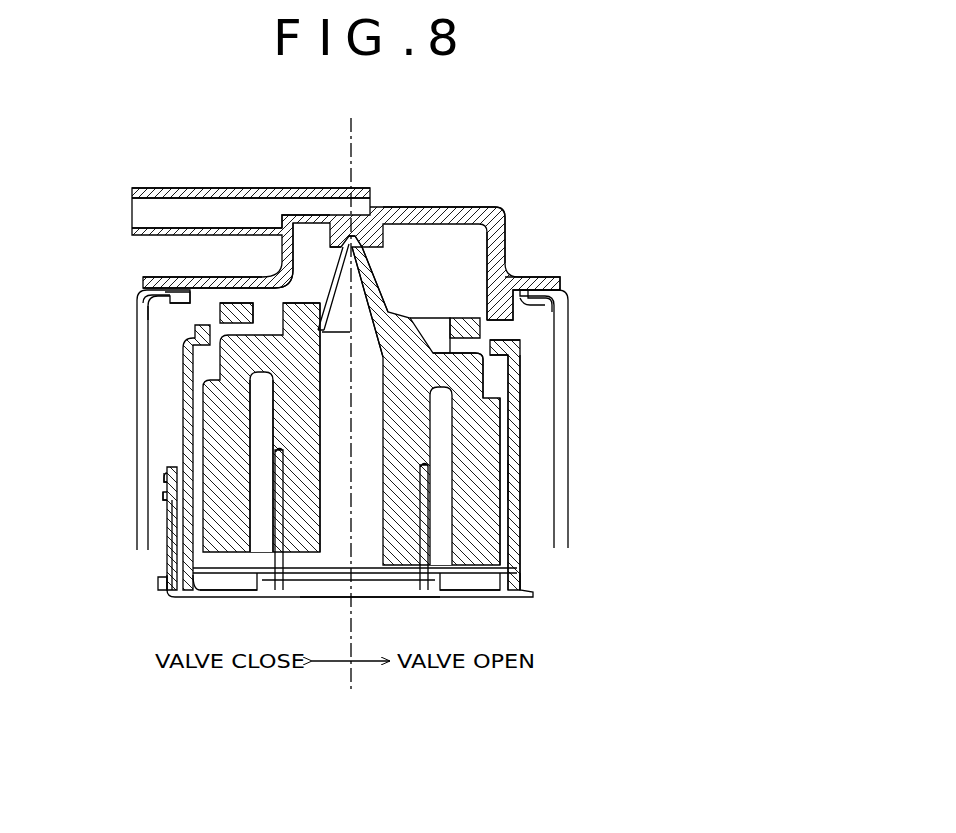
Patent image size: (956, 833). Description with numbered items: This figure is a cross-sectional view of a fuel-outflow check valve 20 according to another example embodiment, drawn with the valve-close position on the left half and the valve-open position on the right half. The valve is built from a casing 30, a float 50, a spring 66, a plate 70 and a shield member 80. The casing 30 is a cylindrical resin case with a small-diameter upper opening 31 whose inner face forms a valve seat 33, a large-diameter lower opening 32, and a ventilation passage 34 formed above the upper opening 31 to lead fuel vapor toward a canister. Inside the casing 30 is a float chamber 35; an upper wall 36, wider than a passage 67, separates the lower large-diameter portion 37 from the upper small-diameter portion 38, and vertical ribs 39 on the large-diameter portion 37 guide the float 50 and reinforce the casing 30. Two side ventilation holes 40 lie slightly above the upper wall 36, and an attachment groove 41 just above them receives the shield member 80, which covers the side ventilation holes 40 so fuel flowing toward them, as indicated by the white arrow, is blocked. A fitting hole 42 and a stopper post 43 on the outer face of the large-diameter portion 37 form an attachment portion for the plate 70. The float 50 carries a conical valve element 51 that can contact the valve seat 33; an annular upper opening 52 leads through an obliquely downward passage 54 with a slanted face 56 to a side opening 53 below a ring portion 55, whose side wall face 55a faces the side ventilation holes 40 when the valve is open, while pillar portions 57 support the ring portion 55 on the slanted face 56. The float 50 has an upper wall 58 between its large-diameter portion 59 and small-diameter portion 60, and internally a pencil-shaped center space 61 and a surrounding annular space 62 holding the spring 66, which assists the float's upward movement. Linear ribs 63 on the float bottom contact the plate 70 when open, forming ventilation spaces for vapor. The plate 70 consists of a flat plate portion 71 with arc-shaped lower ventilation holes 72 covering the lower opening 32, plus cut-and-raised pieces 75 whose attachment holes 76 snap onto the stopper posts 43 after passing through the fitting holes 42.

The fuel-outflow check valve 20 is at (515, 205).
The casing 30 is at (520, 427).
The upper opening 31 is at (358, 232).
The lower opening 32 is at (517, 570).
The valve seat 33 is at (372, 285).
The ventilation passage 34 is at (200, 188).
The float chamber 35 is at (475, 280).
The upper wall 36 is at (500, 345).
The large-diameter portion 37 is at (516, 473).
The small-diameter portion 38 is at (480, 255).
The vertical ribs 39 is at (165, 474).
The side ventilation holes 40 is at (137, 335).
The attachment groove 41 is at (180, 300).
The fitting hole 42 is at (160, 592).
The stopper post 43 is at (166, 495).
The float 50 is at (503, 495).
The valve element 51 is at (415, 330).
The upper opening 52 is at (288, 320).
The side opening 53 is at (190, 300).
The passage 54 is at (430, 315).
The ring portion 55 is at (240, 315).
The side wall face 55a is at (530, 292).
The slanted face 56 is at (500, 235).
The pillar portions 57 is at (215, 330).
The upper wall 58 is at (512, 375).
The large-diameter portion 59 is at (492, 515).
The small-diameter portion 60 is at (475, 372).
The center space 61 is at (335, 437).
The annular space 62 is at (270, 455).
The linear ribs 63 is at (178, 565).
The spring 66 is at (422, 530).
The passage 67 is at (508, 445).
The plate 70 is at (535, 595).
The flat plate portion 71 is at (380, 590).
The lower ventilation holes 72 is at (230, 583).
The cut-and-raised pieces 75 is at (173, 545).
The attachment hole 76 is at (170, 510).
The shield member 80 is at (142, 385).